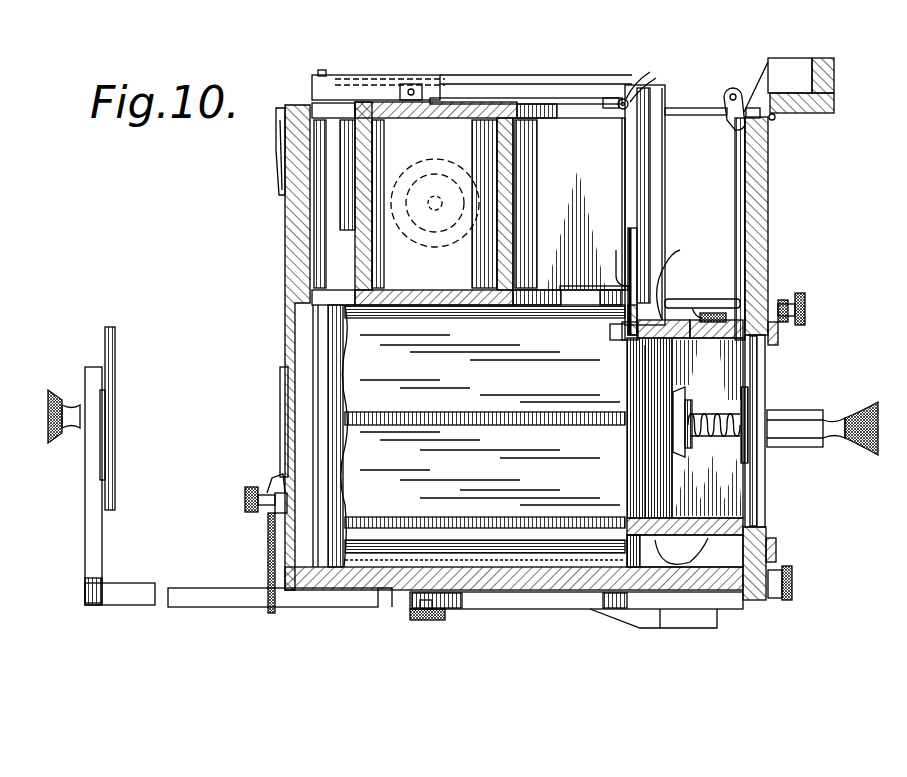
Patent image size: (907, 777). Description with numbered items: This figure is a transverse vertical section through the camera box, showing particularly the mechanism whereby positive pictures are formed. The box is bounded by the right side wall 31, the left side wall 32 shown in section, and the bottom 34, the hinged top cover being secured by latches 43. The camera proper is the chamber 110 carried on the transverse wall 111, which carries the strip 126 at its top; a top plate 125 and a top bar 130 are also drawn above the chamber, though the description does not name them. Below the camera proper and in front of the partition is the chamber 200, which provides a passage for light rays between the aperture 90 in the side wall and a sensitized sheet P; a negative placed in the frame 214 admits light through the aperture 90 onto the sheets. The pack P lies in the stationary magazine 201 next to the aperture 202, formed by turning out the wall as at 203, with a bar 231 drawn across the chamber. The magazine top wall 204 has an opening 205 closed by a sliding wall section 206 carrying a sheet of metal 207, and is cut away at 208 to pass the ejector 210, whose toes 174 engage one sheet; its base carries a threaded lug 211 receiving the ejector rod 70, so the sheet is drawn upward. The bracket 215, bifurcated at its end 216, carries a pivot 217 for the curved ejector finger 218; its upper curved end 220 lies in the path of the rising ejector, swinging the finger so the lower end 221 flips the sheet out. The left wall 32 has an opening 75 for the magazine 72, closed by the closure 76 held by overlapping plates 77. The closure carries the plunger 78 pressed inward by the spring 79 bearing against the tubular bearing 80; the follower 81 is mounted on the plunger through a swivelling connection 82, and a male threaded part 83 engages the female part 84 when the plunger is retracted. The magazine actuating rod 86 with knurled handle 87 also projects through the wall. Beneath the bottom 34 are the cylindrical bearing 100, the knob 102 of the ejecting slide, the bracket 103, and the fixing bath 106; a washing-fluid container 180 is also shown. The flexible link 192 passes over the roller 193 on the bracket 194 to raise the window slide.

The right side wall 31 is at (290, 250).
The left side wall 32 is at (760, 200).
The bottom 34 is at (735, 588).
The latches 43 is at (278, 182).
The ejector rod 70 is at (640, 240).
The magazine 72 is at (735, 383).
The opening 75 is at (766, 528).
The closure 76 is at (758, 492).
The overlapping plates 77 is at (775, 335).
The plunger 78 is at (835, 420).
The spring 79 is at (712, 434).
The tubular bearing 80 is at (808, 420).
The follower 81 is at (660, 376).
The swivelling connection 82 is at (682, 410).
The male threaded part 83 is at (693, 408).
The female threaded part 84 is at (742, 450).
The magazine actuating rod 86 is at (712, 296).
The knurled handle 87 is at (805, 300).
The aperture 90 is at (316, 418).
The cylindrical bearing 100 is at (510, 608).
The knob 102 is at (445, 616).
The bracket 103 is at (392, 607).
The fixing bath 106 is at (700, 620).
The chamber 110 is at (386, 212).
The transverse wall 111 is at (655, 161).
The top plate 125 is at (556, 84).
The strip 126 is at (517, 86).
The top bar 130 is at (352, 92).
The toes 174 is at (685, 542).
The container 180 is at (701, 551).
The flexible link 192 is at (737, 188).
The roller 193 is at (724, 97).
The bracket 194 is at (736, 122).
The chamber 200 is at (485, 380).
The magazine 201 is at (648, 497).
The aperture 202 is at (625, 464).
The turned-out wall portion 203 is at (630, 342).
The top wall 204 is at (682, 338).
The opening 205 is at (720, 339).
The sliding wall section 206 is at (694, 308).
The sheet of metal 207 is at (700, 318).
The cut-away slot 208 is at (672, 268).
The ejector 210 is at (618, 340).
The threaded lug 211 is at (612, 286).
The frame 214 is at (116, 358).
The bracket 215 is at (580, 98).
The bifurcated end 216 is at (623, 98).
The pivot 217 is at (642, 80).
The ejector finger 218 is at (622, 160).
The curved end 220 is at (658, 76).
The lower end 221 is at (614, 272).
The bar 231 is at (473, 318).
The sensitized sheet P is at (646, 441).